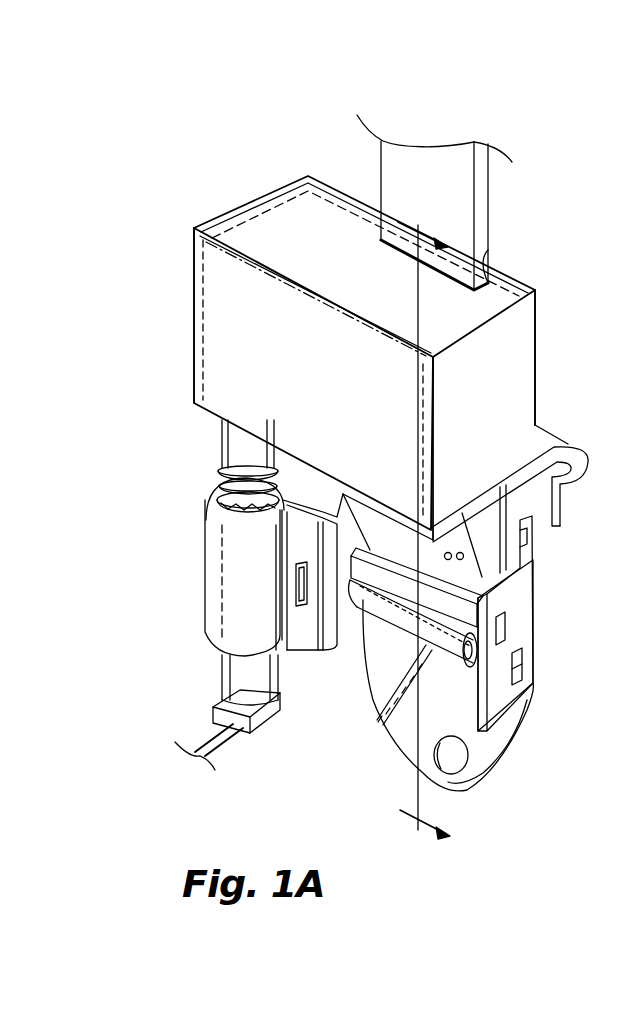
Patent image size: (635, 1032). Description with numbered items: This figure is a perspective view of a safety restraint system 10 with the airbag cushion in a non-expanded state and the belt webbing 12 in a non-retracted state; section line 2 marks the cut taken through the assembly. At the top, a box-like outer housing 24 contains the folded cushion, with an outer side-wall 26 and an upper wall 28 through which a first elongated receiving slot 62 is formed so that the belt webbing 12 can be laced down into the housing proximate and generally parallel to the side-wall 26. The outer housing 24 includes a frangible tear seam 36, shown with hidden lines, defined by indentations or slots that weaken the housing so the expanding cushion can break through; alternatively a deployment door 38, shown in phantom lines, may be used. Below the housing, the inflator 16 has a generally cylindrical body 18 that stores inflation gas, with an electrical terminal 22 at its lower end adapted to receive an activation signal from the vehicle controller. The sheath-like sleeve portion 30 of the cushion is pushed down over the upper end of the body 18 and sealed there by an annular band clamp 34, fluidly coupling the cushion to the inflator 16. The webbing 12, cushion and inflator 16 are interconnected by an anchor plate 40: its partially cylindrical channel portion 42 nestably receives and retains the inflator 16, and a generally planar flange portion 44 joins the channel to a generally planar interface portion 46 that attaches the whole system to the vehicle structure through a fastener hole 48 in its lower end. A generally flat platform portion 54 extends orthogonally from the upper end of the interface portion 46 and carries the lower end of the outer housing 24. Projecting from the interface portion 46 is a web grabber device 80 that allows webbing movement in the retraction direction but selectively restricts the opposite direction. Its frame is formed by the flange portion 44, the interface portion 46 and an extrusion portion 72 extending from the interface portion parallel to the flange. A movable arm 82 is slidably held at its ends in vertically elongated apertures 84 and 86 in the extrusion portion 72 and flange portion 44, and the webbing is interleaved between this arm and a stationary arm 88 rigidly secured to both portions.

The section line 2- 2 is at (434, 538).
The safety restraint system 10 is at (274, 163).
The belt webbing 12 is at (480, 210).
The inflator 16 is at (242, 668).
The cylindrical body 18 is at (204, 519).
The electrical terminal 22 is at (268, 720).
The outer housing 24 is at (211, 218).
The outer side-wall 26 is at (226, 332).
The upper wall 28 is at (330, 262).
The sleeve portion 30 is at (238, 448).
The annular band clamp 34 is at (222, 484).
The frangible tear seam 36 is at (360, 182).
The deployment door 38 is at (250, 190).
The anchor plate 40 is at (540, 610).
The channel portion 42 is at (244, 566).
The flange portion 44 is at (338, 628).
The interface portion 46 is at (387, 713).
The fastener hole 48 is at (436, 747).
The platform portion 54 is at (520, 480).
The first elongated receiving slot 62 is at (490, 262).
The extrusion portion 72 is at (530, 585).
The web grabber device 80 is at (341, 579).
The movable arm 82 is at (463, 660).
The aperture 84 is at (533, 666).
The aperture 86 is at (378, 612).
The stationary arm 88 is at (438, 596).